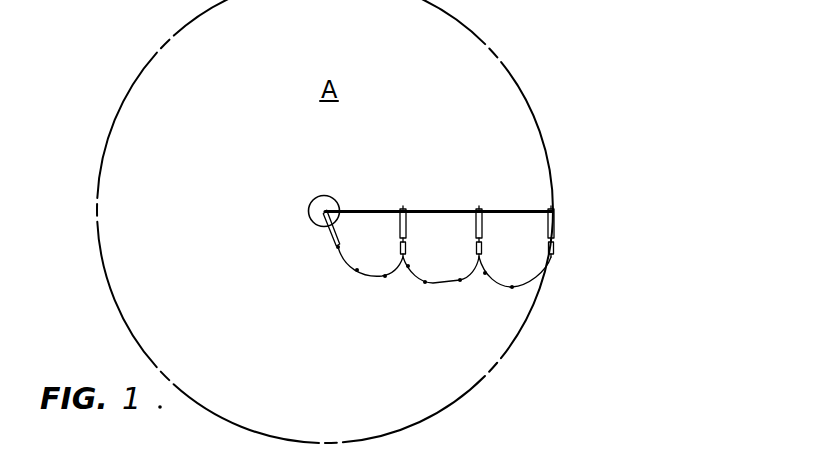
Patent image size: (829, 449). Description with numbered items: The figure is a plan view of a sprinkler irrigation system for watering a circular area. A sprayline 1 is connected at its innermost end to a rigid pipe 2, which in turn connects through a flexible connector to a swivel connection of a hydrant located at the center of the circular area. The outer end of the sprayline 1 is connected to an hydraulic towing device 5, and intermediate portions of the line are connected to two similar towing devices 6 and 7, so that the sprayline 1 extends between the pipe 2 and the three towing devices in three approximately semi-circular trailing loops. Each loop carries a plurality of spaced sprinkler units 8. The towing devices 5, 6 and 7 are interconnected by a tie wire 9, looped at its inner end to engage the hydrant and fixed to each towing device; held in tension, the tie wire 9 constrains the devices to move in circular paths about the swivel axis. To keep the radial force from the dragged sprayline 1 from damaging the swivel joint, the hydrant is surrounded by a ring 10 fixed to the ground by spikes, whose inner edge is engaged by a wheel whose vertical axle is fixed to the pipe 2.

The sprayline 1 is at (421, 285).
The rigid pipe 2 is at (324, 232).
The hydraulic towing device 5 is at (555, 225).
The towing device 6 is at (483, 225).
The towing device 7 is at (407, 224).
The sprinkler unit 8 is at (338, 247).
The tie wire 9 is at (360, 210).
The ring 10 is at (325, 195).